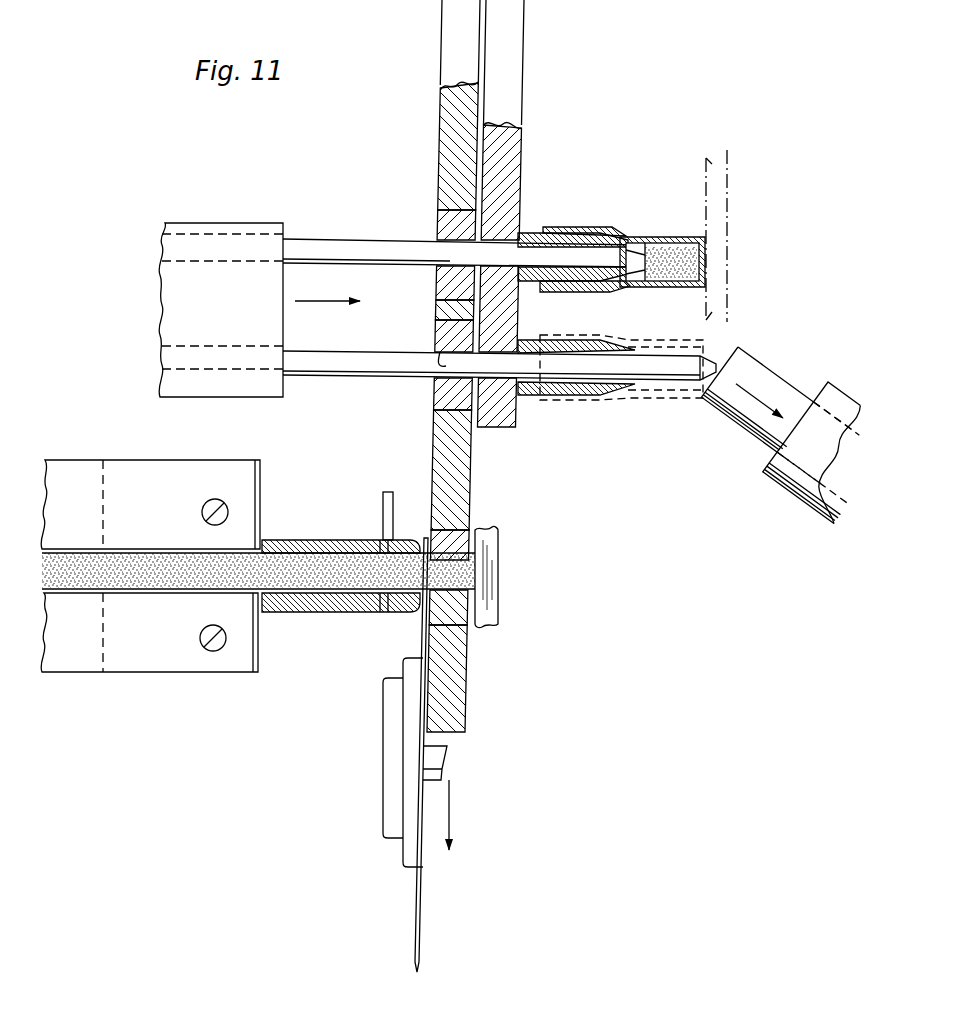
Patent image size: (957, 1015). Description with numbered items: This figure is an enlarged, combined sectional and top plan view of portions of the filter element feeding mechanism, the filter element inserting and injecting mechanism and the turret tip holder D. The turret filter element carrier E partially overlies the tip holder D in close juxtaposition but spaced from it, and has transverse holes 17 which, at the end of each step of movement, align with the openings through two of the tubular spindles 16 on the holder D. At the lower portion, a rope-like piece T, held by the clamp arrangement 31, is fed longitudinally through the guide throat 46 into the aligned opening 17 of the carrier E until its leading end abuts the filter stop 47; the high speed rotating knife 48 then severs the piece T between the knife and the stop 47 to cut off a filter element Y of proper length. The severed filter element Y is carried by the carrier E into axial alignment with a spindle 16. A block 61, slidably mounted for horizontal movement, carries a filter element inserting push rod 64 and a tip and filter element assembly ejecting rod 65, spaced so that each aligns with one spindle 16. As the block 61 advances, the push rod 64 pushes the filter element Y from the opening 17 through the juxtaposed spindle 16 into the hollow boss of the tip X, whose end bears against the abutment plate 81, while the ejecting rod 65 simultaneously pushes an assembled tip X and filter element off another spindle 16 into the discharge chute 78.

The turret filter element carrier disc E is at (438, 152).
The turret cigar or cigarette tip holder D is at (523, 132).
The spindle 16 is at (531, 238).
The cigar or cigarette tip X is at (619, 235).
The filter element Y is at (677, 245).
The abutment plate 81 is at (729, 193).
The filter element inserting push rod 64 is at (378, 242).
The tip and filter element assembly ejecting rod 65 is at (368, 366).
The block 61 is at (178, 289).
The transverse hole 17 is at (446, 368).
The discharge chute 78 is at (824, 512).
The clamp 31 is at (66, 550).
The rope-like piece T is at (165, 575).
The guide throat 46 is at (324, 610).
The filter stop 47 is at (498, 549).
The high speed rotating knife 48 is at (420, 797).